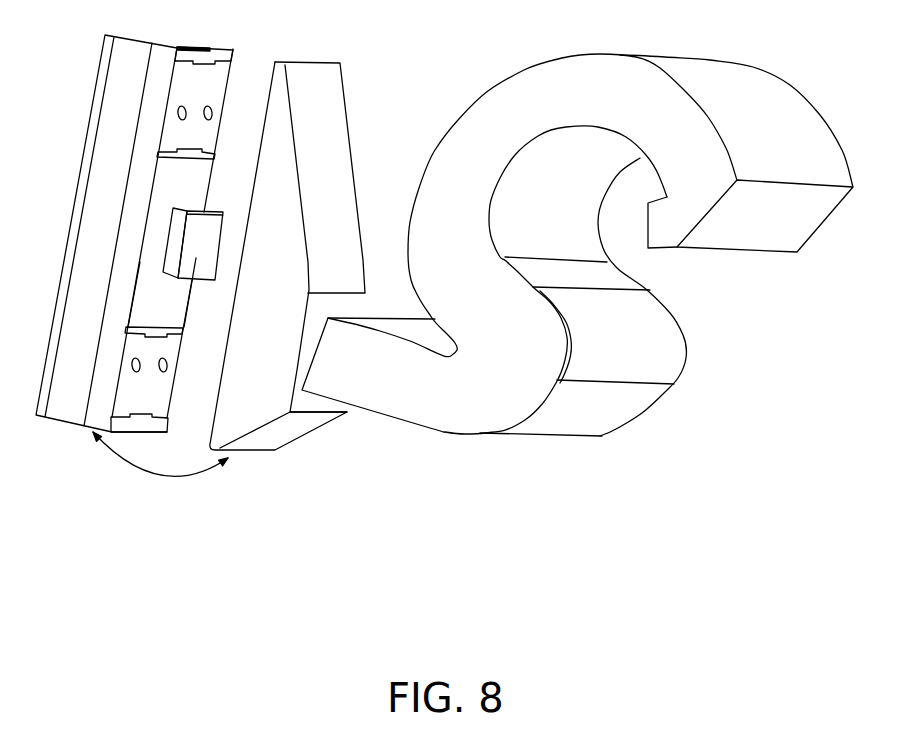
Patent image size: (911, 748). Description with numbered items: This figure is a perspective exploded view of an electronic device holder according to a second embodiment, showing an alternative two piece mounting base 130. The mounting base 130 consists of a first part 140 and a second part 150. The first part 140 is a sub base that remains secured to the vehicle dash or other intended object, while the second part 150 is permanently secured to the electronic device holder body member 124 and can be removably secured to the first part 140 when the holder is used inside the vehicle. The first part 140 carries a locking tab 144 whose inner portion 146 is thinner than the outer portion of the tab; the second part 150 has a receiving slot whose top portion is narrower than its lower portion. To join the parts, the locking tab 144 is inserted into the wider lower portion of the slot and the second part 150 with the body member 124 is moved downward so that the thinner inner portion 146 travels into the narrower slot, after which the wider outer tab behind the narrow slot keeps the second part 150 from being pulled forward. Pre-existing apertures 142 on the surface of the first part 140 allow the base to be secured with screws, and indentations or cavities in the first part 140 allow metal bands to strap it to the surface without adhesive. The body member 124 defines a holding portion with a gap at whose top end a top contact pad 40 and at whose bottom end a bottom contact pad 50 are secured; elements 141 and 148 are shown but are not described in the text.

The body member 124 is at (500, 113).
The top contact pad 40 is at (643, 237).
The bottom contact pad 50 is at (675, 348).
The second part 150 is at (297, 306).
The mounting base 130 is at (160, 476).
The first part 140 is at (205, 172).
The plate 141 is at (140, 312).
The pre-existing apertures 142 is at (183, 104).
The locking tab 144 is at (203, 282).
The inner portion 146 is at (173, 238).
The panel 148 is at (65, 292).